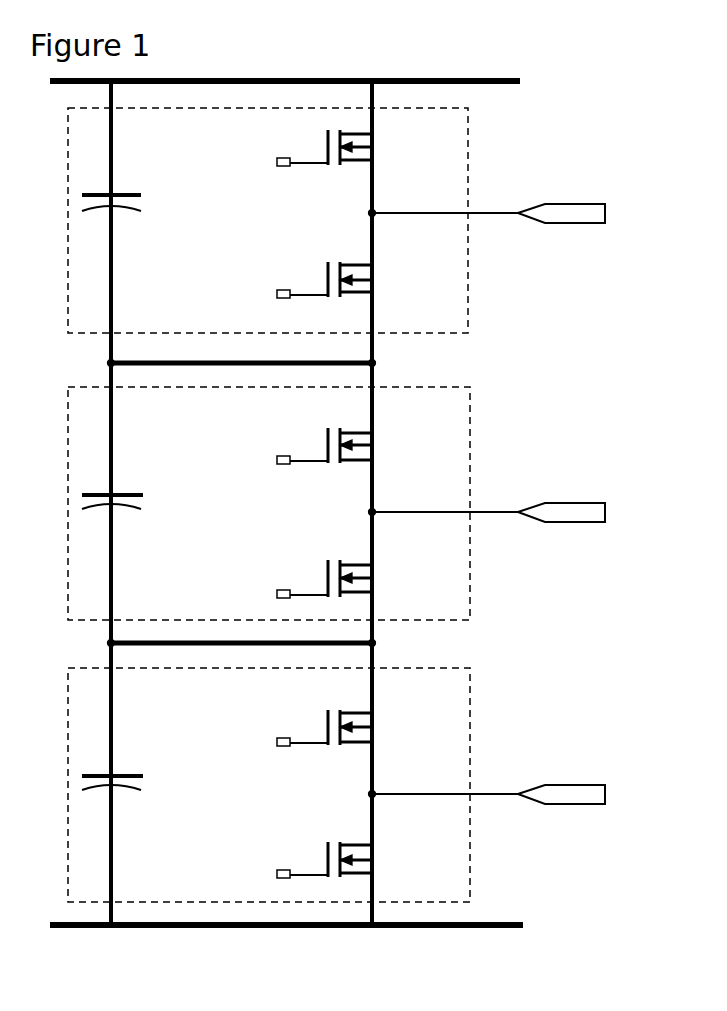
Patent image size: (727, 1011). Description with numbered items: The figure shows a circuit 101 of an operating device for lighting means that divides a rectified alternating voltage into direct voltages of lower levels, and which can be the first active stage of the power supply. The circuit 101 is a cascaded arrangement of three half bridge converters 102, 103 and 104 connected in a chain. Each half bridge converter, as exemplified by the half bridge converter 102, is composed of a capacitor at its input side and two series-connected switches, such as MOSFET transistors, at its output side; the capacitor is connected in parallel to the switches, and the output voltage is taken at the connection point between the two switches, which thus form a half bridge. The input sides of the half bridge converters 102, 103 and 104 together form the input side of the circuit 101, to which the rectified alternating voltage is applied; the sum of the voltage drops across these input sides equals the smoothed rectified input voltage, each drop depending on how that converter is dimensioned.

The circuit 101 is at (286, 534).
The half bridge converter 102 is at (360, 220).
The half bridge converter 103 is at (357, 503).
The half bridge converter 104 is at (357, 785).